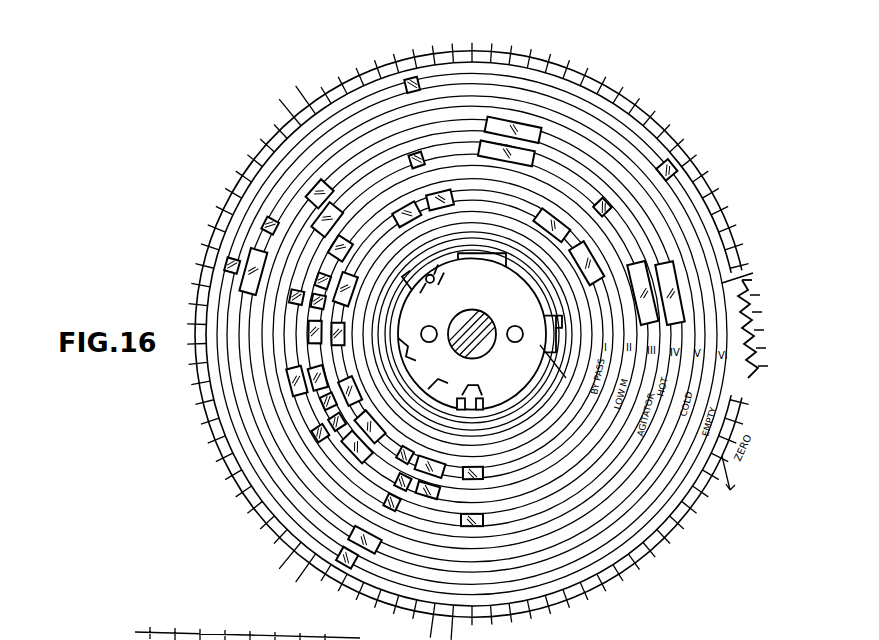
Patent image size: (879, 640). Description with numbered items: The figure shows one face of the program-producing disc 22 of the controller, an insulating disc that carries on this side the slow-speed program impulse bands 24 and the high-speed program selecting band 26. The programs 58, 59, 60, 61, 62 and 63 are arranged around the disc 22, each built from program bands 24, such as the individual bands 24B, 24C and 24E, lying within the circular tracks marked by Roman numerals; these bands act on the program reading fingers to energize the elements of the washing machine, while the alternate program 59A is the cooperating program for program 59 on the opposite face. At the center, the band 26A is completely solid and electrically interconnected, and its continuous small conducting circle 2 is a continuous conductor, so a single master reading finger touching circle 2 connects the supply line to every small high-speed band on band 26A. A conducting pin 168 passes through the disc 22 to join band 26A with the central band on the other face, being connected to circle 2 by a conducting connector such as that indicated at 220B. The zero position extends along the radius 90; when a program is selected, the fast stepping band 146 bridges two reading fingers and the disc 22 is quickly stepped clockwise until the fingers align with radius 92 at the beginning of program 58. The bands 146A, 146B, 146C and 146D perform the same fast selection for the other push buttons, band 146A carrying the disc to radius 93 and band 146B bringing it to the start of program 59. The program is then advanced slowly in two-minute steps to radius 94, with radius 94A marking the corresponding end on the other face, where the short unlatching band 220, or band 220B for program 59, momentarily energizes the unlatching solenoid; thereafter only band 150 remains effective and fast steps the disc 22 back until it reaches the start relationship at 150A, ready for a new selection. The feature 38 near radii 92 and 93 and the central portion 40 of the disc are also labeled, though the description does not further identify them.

The program-carrying disc 22 is at (666, 44).
The program impulse-producing bands 24 is at (528, 529).
The apertures 24B is at (678, 304).
The aperture 24C is at (266, 216).
The aperture 24E is at (585, 255).
The program selecting band 26 is at (544, 417).
The central band 26A is at (437, 268).
The continuous conducting circle 2 is at (545, 345).
The contact 38 is at (748, 290).
The hub shaft 40 is at (506, 300).
The program 58 is at (719, 134).
The program 59 is at (522, 34).
The alternate program 59A is at (244, 604).
The program 60 is at (172, 272).
The program 61 is at (228, 527).
The program 62 is at (309, 588).
The program 63 is at (511, 626).
The zero position radius 90 is at (522, 354).
The program start radius 92 is at (770, 330).
The radius 93 is at (747, 273).
The program end radius 94 is at (594, 64).
The program end radius 94A is at (230, 633).
The fast stepping impulse band 146 is at (585, 335).
The selecting band 146A is at (580, 316).
The selecting band 146B is at (540, 222).
The selecting band 146C is at (506, 238).
The selecting band 146D is at (404, 268).
The return band 150 is at (545, 324).
The start position of band 150 150A is at (563, 368).
The conducting pin 168 is at (425, 304).
The unlatching band 220 is at (508, 268).
The unlatching band and connector 220B is at (457, 291).